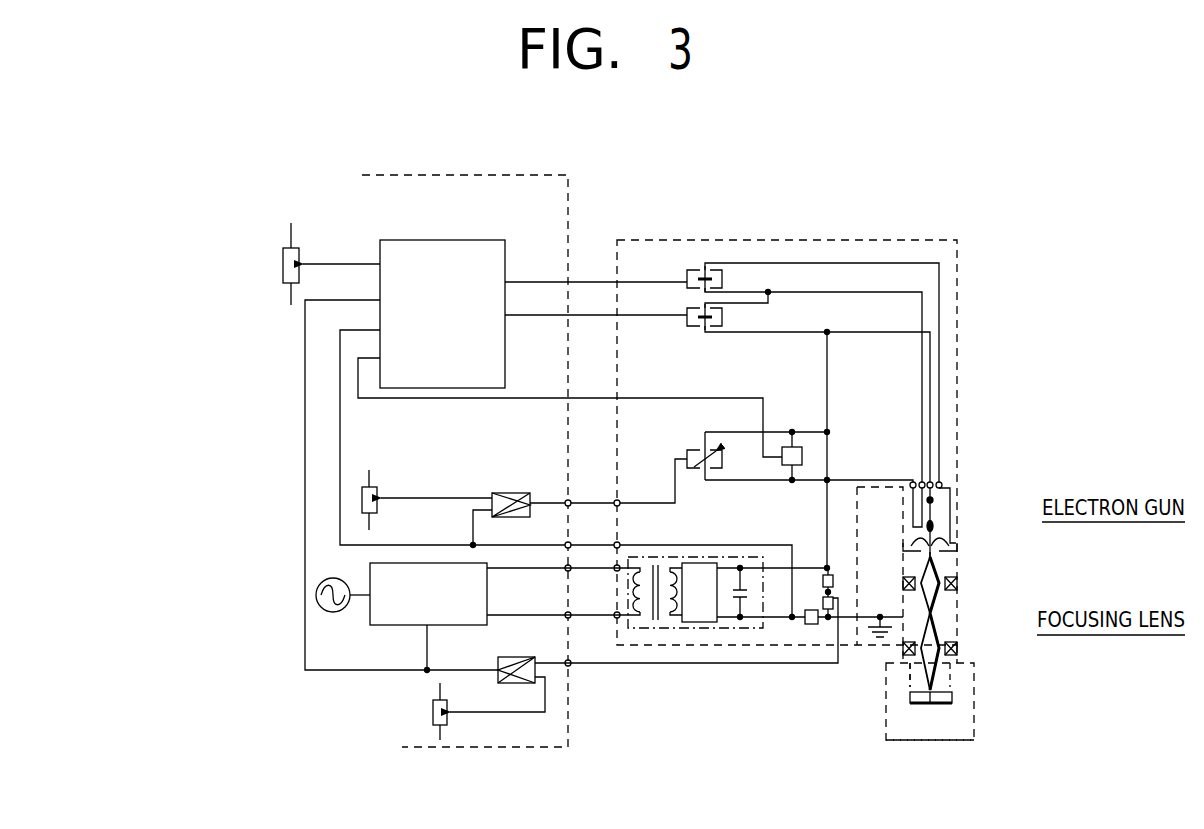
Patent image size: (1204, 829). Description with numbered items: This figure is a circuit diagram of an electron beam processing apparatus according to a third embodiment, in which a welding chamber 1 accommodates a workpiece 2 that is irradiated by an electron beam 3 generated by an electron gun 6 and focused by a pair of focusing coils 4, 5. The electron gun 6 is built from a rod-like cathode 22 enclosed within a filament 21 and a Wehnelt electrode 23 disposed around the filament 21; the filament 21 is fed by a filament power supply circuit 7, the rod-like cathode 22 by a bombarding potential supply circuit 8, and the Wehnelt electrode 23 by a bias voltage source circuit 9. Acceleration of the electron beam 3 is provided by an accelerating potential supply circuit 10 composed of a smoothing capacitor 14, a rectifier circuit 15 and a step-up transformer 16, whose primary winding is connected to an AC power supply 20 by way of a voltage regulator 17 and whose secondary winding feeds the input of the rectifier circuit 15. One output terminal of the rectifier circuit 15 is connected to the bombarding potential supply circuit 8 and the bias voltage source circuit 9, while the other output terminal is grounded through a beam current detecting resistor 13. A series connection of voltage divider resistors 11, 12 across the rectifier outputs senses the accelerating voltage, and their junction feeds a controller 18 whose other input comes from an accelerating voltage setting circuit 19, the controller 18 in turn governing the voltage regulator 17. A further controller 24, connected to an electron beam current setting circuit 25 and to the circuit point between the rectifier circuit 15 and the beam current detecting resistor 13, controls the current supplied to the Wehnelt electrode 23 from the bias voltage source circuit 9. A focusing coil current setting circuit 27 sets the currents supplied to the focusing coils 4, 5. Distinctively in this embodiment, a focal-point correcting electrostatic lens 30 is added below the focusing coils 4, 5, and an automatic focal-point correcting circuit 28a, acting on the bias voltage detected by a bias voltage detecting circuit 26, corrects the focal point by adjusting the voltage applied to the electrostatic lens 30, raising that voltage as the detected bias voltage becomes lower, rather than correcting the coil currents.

The welding chamber 1 is at (923, 742).
The workpiece 2 is at (955, 698).
The electron beam 3 is at (941, 600).
The focusing coil 4 is at (958, 584).
The focusing coil 5 is at (958, 649).
The electron gun 6 is at (958, 548).
The filament power supply circuit 7 is at (692, 268).
The bombarding potential supply circuit 8 is at (716, 313).
The bias voltage source circuit 9 is at (691, 450).
The accelerating potential supply circuit 10 is at (720, 552).
The voltage divider resistor 11 is at (840, 576).
The voltage divider resistor 12 is at (840, 602).
The beam current detecting resistor 13 is at (812, 624).
The smoothing capacitor 14 is at (750, 588).
The rectifier circuit 15 is at (700, 626).
The step-up transformer 16 is at (648, 560).
The voltage regulator 17 is at (410, 628).
The controller 18 is at (517, 684).
The accelerating voltage setting circuit 19 is at (448, 722).
The AC power supply 20 is at (330, 614).
The filament 21 is at (948, 506).
The rod-like cathode 22 is at (940, 489).
The Wehnelt electrode 23 is at (952, 530).
The controller 24 is at (500, 491).
The electron beam current setting circuit 25 is at (360, 493).
The bias voltage detecting circuit 26 is at (802, 456).
The focusing coil current setting circuit 27 is at (281, 262).
The automatic focal-point correcting circuit 28a is at (483, 238).
The focal-point correcting electrostatic lens 30 is at (910, 684).